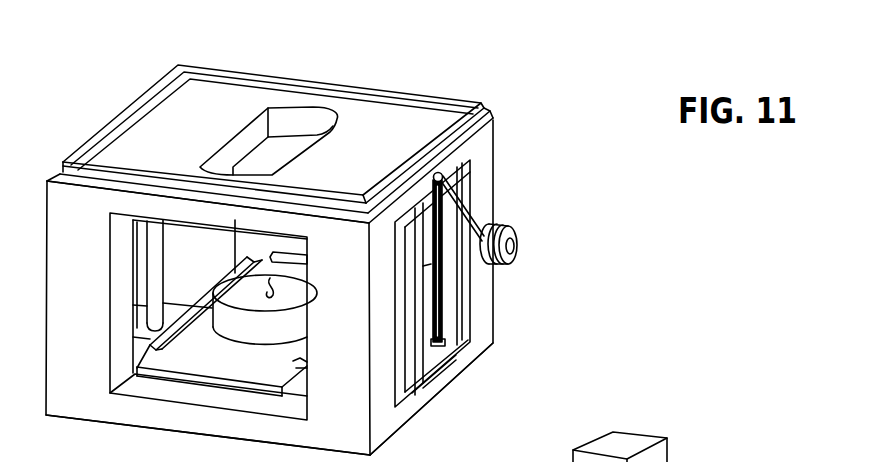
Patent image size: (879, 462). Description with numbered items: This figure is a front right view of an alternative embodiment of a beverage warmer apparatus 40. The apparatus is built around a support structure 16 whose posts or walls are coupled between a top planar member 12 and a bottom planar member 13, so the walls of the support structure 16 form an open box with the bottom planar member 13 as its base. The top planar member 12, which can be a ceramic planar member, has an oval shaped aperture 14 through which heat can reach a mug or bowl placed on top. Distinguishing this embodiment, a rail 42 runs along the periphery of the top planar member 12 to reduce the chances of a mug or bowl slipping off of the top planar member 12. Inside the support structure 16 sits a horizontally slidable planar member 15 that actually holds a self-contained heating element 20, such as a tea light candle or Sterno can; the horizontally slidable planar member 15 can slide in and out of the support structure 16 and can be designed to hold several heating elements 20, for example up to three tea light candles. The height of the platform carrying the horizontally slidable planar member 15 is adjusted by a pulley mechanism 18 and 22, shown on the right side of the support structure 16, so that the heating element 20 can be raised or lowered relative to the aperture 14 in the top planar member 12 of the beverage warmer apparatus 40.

The top planar member 12 is at (183, 133).
The bottom planar member 13 is at (216, 434).
The aperture 14 is at (287, 144).
The horizontally slidable planar member 15 is at (243, 375).
The support structure 16 is at (80, 325).
The pulley mechanism 18 is at (515, 238).
The self-contained heating element 20 is at (260, 308).
The pulley mechanism 22 is at (443, 205).
The beverage warmer apparatus 40 is at (761, 204).
The rail 42 is at (413, 92).